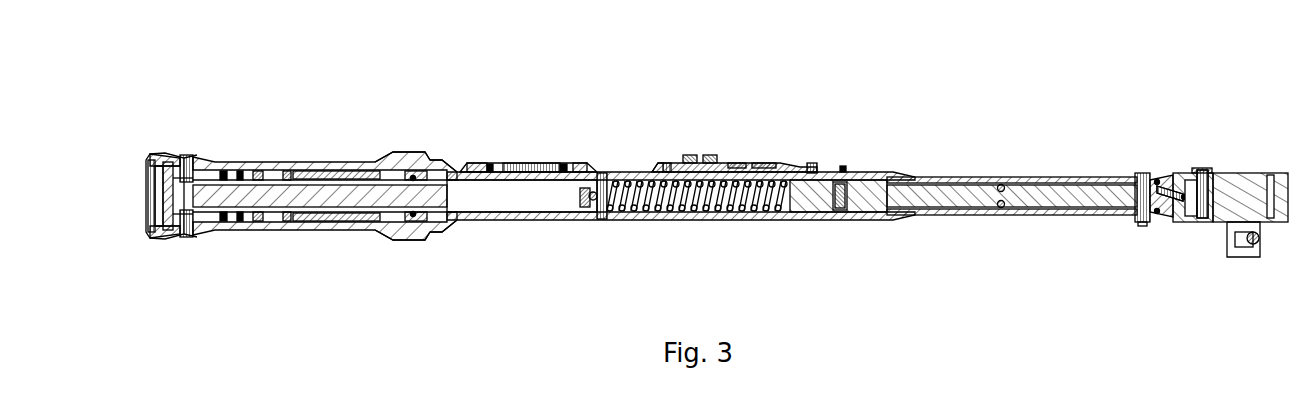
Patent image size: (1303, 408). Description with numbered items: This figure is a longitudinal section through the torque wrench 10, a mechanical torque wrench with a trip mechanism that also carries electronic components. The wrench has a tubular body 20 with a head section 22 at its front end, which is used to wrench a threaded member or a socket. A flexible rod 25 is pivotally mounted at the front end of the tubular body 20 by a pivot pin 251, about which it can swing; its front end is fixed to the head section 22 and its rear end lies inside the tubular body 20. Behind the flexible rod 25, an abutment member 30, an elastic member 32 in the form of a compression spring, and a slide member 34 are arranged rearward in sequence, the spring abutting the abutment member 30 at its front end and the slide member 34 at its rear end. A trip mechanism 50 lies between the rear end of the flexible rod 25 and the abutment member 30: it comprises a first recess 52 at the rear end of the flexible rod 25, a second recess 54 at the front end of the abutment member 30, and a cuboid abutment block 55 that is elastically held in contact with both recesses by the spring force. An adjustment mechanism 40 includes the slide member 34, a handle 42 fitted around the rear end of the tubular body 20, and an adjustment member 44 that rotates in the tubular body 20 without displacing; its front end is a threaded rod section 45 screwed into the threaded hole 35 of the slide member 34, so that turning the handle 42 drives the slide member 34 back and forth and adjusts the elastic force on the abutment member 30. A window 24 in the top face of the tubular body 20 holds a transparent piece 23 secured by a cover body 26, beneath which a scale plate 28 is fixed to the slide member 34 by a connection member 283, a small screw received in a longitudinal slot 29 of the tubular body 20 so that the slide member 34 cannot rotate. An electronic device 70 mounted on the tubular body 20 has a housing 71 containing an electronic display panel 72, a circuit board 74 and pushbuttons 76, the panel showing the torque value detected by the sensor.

The torque wrench 10 is at (1100, 104).
The tubular body 20 is at (978, 176).
The head section 22 is at (1247, 172).
The transparent piece 23 is at (538, 160).
The window 24 is at (575, 160).
The flexible rod 25 is at (1027, 200).
The pivot pin 251 is at (1141, 222).
The cover body 26 is at (473, 160).
The scale plate 28 is at (443, 160).
The connection member 283 is at (403, 158).
The longitudinal slot 29 is at (390, 158).
The abutment member 30 is at (800, 205).
The elastic member 32 is at (703, 205).
The slide member 34 is at (435, 230).
The threaded hole 35 is at (390, 230).
The adjustment mechanism 40 is at (205, 143).
The handle 42 is at (265, 158).
The adjustment member 44 is at (220, 200).
The threaded rod section 45 is at (345, 197).
The trip mechanism 50 is at (842, 160).
The first recess 52 is at (865, 172).
The second recess 54 is at (823, 160).
The abutment block 55 is at (838, 210).
The electronic device 70 is at (665, 134).
The housing 71 is at (655, 158).
The electronic display panel 72 is at (765, 158).
The circuit board 74 is at (738, 158).
The pushbutton 76 is at (690, 158).